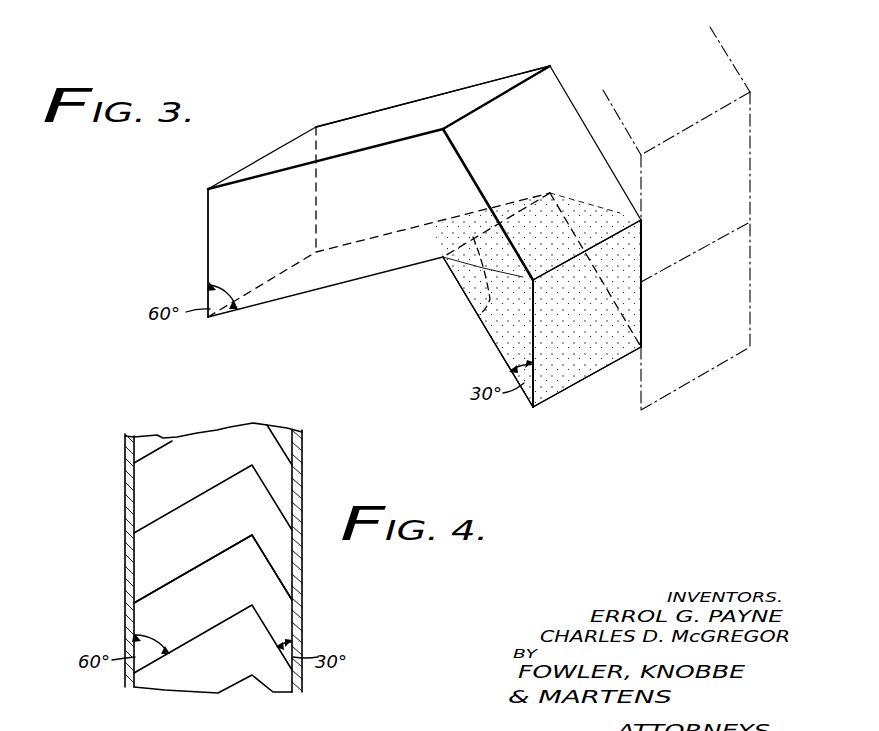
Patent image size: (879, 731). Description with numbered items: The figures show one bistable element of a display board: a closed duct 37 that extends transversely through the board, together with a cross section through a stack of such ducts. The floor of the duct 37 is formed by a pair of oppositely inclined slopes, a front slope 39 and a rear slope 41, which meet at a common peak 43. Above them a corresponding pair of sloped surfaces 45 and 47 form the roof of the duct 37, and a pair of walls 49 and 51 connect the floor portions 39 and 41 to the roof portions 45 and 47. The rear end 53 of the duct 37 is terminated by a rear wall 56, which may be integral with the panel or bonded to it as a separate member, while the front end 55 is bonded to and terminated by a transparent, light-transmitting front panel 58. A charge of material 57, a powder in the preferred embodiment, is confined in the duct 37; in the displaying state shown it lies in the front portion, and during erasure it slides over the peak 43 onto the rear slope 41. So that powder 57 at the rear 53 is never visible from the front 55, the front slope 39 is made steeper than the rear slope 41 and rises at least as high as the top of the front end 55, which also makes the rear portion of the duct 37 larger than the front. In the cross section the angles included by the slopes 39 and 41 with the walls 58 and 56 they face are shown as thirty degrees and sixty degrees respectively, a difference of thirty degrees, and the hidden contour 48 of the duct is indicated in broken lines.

In FIG. 3, the duct 37 is at (556, 67).
In FIG. 4, the duct 37 is at (188, 480).
In FIG. 3, the front slope 39 is at (590, 360).
In FIG. 4, the front slope 39 is at (290, 592).
In FIG. 3, the rear slope 41 is at (349, 280).
In FIG. 4, the rear slope 41 is at (153, 589).
In FIG. 3, the peak 43 is at (477, 313).
In FIG. 3, the sloped roof surface 45 is at (572, 140).
In FIG. 3, the sloped roof surface 47 is at (378, 114).
In FIG. 3, the hidden contour of block 48 is at (477, 313).
In FIG. 3, the wall 49 is at (442, 159).
In FIG. 3, the wall 51 is at (641, 238).
In FIG. 3, the rear end 53 is at (222, 222).
In FIG. 3, the front end 55 is at (556, 376).
In FIG. 4, the front end 55 is at (290, 482).
In FIG. 4, the rear wall 56 is at (125, 458).
In FIG. 3, the powder 57 is at (507, 357).
In FIG. 4, the transparent front panel 58 is at (305, 557).